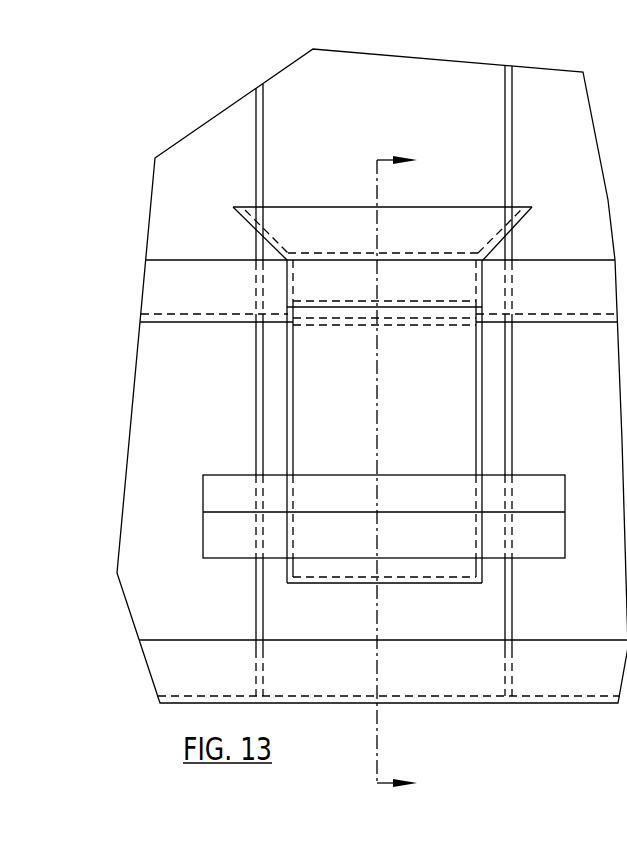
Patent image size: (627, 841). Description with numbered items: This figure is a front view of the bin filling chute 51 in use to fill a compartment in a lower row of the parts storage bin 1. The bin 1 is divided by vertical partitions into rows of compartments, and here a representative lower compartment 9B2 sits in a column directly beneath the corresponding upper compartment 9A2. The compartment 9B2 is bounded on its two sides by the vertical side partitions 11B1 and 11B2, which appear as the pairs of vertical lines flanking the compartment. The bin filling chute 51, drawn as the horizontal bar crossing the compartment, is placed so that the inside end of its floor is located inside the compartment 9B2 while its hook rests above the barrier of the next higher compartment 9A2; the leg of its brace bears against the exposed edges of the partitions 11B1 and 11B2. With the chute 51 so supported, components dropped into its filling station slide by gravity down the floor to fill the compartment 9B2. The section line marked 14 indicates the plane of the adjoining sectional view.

The parts storage bin 1 is at (114, 609).
The compartment 9A2 is at (339, 109).
The compartment 9B2 is at (339, 634).
The side partition 11B1 is at (260, 390).
The side partition 11B2 is at (599, 399).
The bin filling chute 51 is at (222, 572).
The section line 14- 14 is at (372, 473).